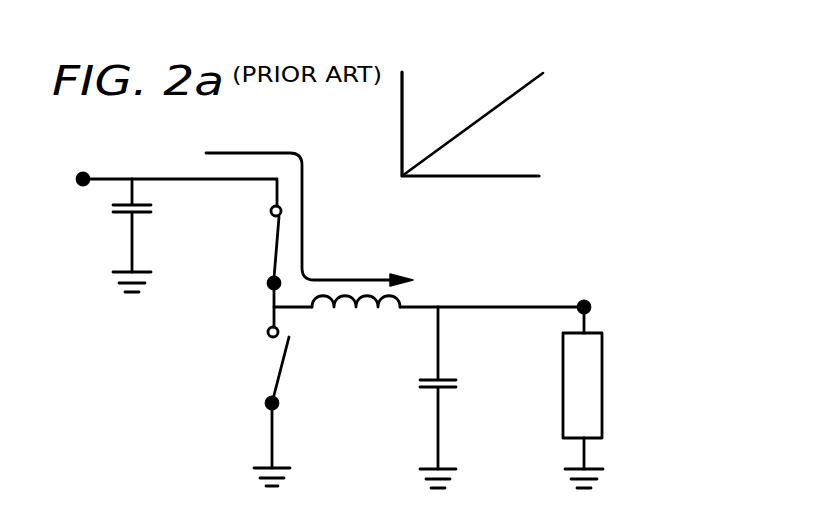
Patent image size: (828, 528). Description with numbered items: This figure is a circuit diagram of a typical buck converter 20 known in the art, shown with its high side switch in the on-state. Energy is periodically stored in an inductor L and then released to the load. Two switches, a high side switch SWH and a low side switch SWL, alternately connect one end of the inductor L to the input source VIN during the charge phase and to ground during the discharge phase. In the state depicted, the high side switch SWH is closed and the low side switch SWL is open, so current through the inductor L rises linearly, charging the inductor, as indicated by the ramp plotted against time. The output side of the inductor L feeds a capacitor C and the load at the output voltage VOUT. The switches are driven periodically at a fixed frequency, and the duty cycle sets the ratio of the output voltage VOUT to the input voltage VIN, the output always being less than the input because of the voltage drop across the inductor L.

The buck converter 20 is at (603, 160).
The input source VIN is at (170, 175).
The output voltage VOUT is at (574, 306).
The high side switch SWH is at (244, 247).
The low side switch SWL is at (249, 368).
The inductor L is at (356, 316).
The output capacitor C is at (448, 388).